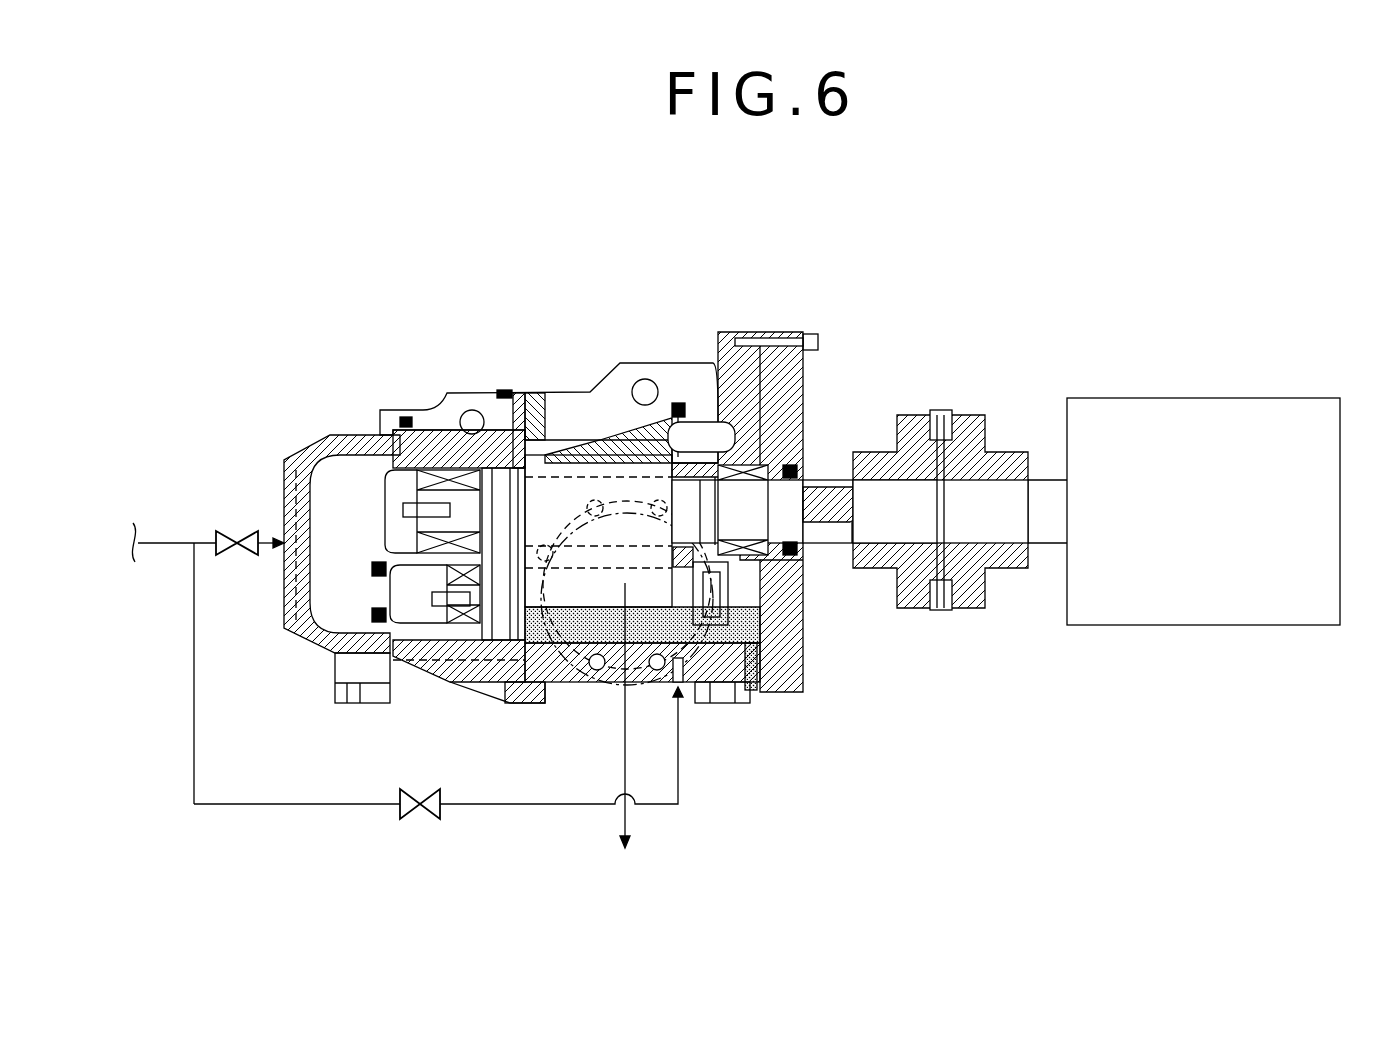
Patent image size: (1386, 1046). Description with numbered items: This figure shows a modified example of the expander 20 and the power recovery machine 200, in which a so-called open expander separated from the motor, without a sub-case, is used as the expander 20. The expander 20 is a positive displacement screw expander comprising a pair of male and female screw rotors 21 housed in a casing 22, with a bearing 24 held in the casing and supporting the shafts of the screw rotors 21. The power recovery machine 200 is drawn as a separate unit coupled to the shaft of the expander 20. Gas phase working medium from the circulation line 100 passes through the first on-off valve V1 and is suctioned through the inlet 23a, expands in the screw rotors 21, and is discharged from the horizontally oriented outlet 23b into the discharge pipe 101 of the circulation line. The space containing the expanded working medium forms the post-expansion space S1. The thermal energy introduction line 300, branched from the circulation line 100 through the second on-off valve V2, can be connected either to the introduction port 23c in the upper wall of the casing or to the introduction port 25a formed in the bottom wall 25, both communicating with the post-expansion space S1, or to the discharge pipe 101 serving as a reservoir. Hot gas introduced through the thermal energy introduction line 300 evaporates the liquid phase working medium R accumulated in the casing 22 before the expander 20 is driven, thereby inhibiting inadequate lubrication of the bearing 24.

The expander 20 is at (408, 410).
The screw rotors 21 is at (620, 520).
The casing 22 is at (743, 459).
The inlet 23a is at (284, 513).
The outlet 23b is at (632, 477).
The introduction port 23c is at (673, 403).
The bearing 24 is at (796, 432).
The bottom wall 25 is at (553, 665).
The introduction port 25a is at (673, 691).
The circulation line 100 is at (153, 541).
The discharge pipe 101 is at (625, 783).
The power recovery machine 200 is at (1165, 398).
The thermal energy introduction line 300 is at (262, 804).
The first on-off valve V1 is at (253, 556).
The second on-off valve V2 is at (420, 790).
The liquid phase working medium R is at (640, 614).
The post-expansion space S1 is at (710, 452).